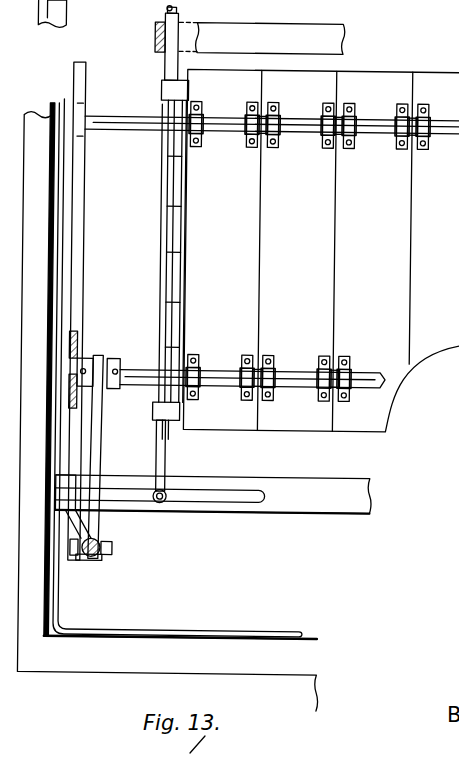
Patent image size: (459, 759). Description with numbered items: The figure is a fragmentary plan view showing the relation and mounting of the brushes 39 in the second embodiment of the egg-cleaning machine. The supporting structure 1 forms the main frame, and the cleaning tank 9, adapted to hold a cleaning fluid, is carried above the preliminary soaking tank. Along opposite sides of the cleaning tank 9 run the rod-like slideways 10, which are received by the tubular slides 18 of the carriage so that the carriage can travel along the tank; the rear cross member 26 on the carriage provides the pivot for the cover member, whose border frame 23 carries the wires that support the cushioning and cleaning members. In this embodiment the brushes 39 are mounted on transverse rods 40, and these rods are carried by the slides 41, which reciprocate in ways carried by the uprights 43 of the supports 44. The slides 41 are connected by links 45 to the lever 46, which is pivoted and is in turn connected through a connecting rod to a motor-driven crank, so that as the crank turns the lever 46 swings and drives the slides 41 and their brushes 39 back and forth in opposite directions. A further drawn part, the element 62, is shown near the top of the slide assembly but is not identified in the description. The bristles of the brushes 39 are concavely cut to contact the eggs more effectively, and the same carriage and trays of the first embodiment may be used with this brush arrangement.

The supporting structure 1 is at (40, 125).
The cleaning tank 9 is at (58, 252).
The rod-like slideways 10 is at (168, 459).
The tubular slides 18 is at (160, 236).
The border frame 23 is at (164, 177).
The rear cross member 26 is at (162, 89).
The brushes 39 is at (435, 352).
The transverse rods 40 is at (123, 128).
The slides 41 is at (84, 207).
The uprights 43 is at (62, 492).
The supports 44 is at (327, 513).
The links 45 is at (101, 457).
The lever 46 is at (88, 564).
The threaded sleeve 62 is at (157, 27).